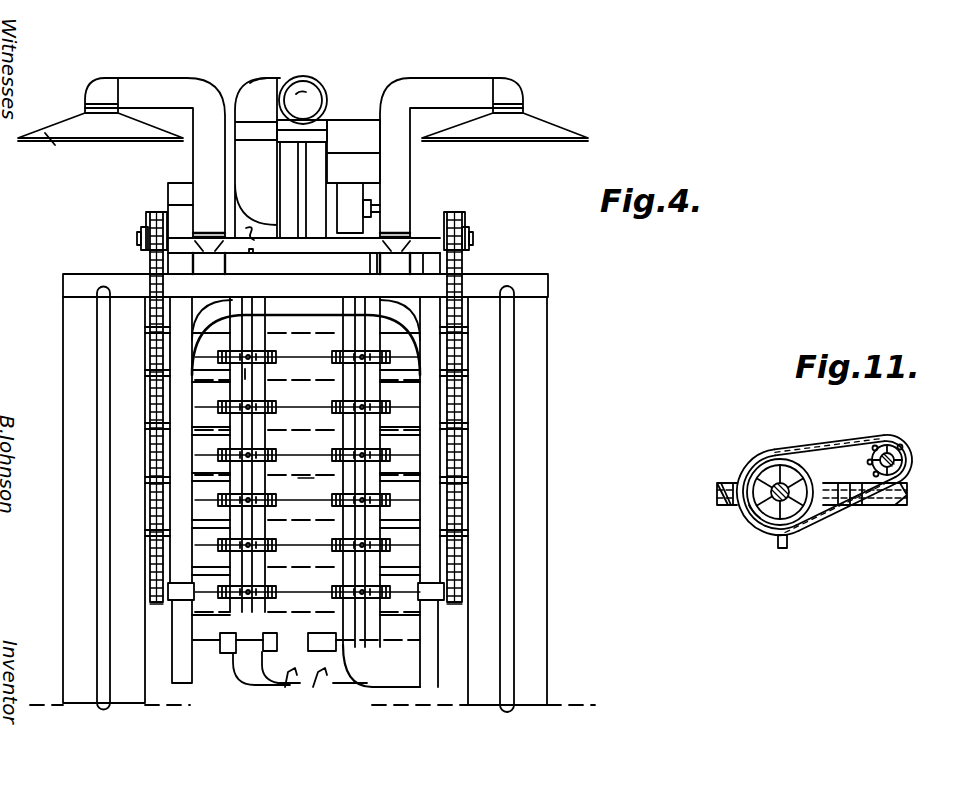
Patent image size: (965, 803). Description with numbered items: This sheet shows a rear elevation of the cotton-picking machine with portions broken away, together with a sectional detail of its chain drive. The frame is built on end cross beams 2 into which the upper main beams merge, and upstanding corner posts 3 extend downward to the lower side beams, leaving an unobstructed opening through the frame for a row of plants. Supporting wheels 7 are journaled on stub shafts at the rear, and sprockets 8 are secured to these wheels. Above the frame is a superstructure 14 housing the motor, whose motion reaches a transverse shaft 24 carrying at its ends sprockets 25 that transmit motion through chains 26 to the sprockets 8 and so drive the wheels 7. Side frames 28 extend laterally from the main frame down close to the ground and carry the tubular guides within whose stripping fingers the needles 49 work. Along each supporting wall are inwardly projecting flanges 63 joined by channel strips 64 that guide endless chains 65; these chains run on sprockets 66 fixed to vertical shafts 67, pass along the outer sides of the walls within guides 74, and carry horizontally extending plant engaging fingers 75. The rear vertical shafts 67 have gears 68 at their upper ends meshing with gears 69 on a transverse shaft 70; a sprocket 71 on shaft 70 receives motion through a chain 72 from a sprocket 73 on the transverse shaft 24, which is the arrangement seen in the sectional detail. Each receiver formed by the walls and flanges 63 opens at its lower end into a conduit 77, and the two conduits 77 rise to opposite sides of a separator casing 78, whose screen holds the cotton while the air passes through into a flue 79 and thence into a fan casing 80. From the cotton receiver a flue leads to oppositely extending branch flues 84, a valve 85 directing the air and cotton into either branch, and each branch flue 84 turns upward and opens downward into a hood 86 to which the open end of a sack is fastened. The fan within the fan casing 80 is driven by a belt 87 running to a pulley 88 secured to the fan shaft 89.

In FIG. 4, the end cross beam 2 is at (430, 285).
In FIG. 4, the upstanding corner post 3 is at (172, 407).
In FIG. 4, the supporting wheel 7 is at (80, 593).
In FIG. 4, the sprocket 8 is at (157, 543).
In FIG. 4, the superstructure 14 is at (175, 185).
In FIG. 4, the transverse shaft 24 is at (141, 243).
In FIG. 11, the transverse shaft 24 is at (893, 457).
In FIG. 4, the sprocket 25 is at (150, 213).
In FIG. 4, the chain 26 is at (153, 355).
In FIG. 4, the side frame 28 is at (62, 280).
In FIG. 4, the needle 49 is at (298, 332).
In FIG. 4, the inwardly projecting flange 63 is at (348, 580).
In FIG. 4, the channel strip 64 is at (337, 455).
In FIG. 4, the endless chain 65 is at (250, 548).
In FIG. 4, the sprocket 66 is at (335, 407).
In FIG. 4, the vertical shaft 67 is at (252, 375).
In FIG. 11, the vertical shaft 67 is at (787, 543).
In FIG. 11, the gear 68 is at (750, 513).
In FIG. 11, the gear 69 is at (770, 480).
In FIG. 11, the transverse shaft 70 is at (788, 480).
In FIG. 11, the sprocket 71 is at (768, 530).
In FIG. 11, the chain 72 is at (833, 510).
In FIG. 11, the sprocket 73 is at (873, 440).
In FIG. 4, the guide 74 is at (222, 650).
In FIG. 4, the plant engaging finger 75 is at (314, 460).
In FIG. 4, the conduit 77 is at (231, 128).
In FIG. 4, the separator casing 78 is at (326, 105).
In FIG. 4, the flue 79 is at (262, 75).
In FIG. 4, the fan casing 80 is at (324, 152).
In FIG. 4, the branch flue 84 is at (202, 153).
In FIG. 4, the valve 85 is at (250, 236).
In FIG. 4, the hood 86 is at (62, 130).
In FIG. 4, the belt 87 is at (352, 187).
In FIG. 4, the pulley 88 is at (363, 193).
In FIG. 4, the fan shaft 89 is at (372, 213).